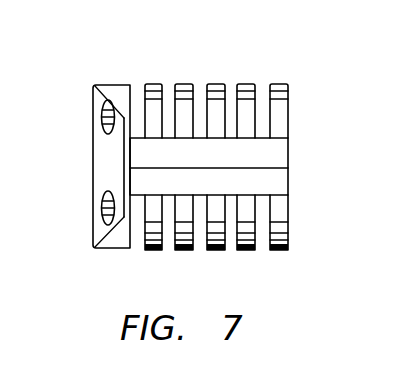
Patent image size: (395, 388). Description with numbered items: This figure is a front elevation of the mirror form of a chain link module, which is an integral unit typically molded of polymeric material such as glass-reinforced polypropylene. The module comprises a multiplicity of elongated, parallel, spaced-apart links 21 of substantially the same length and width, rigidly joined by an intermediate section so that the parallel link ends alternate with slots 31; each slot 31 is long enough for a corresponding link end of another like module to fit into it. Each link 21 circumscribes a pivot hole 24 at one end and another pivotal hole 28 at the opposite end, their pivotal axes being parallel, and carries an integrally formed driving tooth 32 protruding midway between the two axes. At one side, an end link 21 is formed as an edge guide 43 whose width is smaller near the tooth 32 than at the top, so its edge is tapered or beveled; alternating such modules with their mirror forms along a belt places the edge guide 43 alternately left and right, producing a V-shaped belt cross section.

The link 21 is at (236, 168).
The pivot hole 24 is at (105, 213).
The pivotal hole 28 is at (104, 115).
The slots 31 is at (263, 84).
The driving tooth 32 is at (277, 185).
The edge guide 43 is at (84, 166).